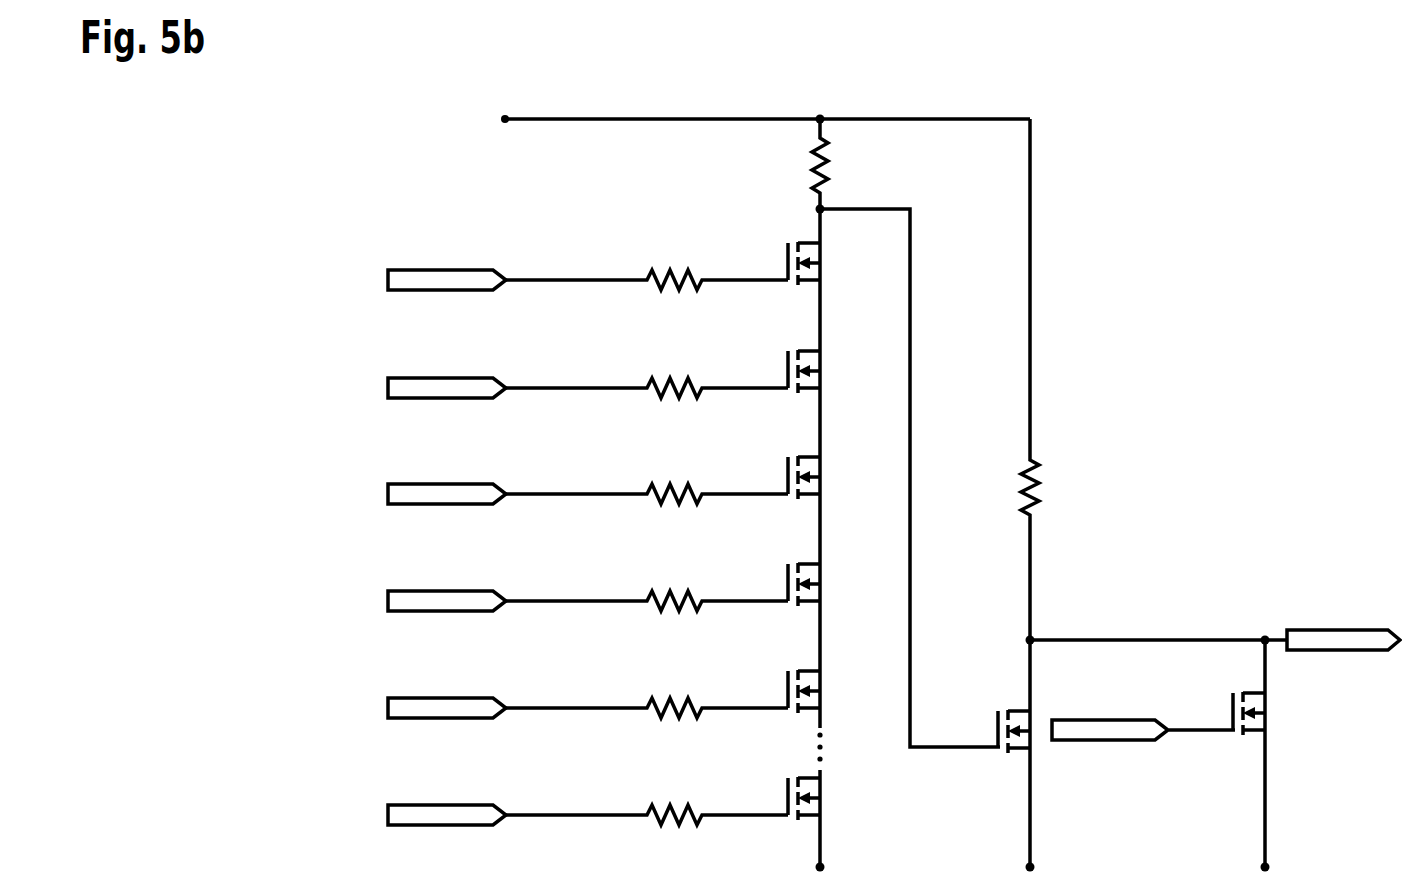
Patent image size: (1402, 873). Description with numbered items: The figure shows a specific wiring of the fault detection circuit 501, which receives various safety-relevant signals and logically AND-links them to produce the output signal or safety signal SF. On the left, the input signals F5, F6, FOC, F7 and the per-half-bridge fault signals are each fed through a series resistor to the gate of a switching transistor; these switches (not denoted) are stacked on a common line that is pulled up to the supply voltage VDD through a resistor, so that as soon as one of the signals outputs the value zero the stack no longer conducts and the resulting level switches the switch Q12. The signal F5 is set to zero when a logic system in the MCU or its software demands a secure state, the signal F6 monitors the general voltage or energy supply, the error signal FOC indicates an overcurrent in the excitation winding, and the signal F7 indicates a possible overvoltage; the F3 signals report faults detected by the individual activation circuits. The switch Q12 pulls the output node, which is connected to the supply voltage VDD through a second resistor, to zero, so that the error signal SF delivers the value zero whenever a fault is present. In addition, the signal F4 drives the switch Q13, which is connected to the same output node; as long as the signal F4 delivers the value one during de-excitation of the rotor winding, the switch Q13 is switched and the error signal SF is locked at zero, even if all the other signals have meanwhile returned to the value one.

The fault detection circuit 501 is at (1160, 80).
The supply voltage VDD is at (739, 119).
The signal F5 is at (441, 270).
The signal F6 is at (441, 378).
The error signal FOC is at (441, 484).
The signal F7 is at (441, 591).
The switch Q12 is at (991, 731).
The switch Q13 is at (1227, 713).
The signal F4 is at (1105, 740).
The safety signal SF is at (1340, 630).